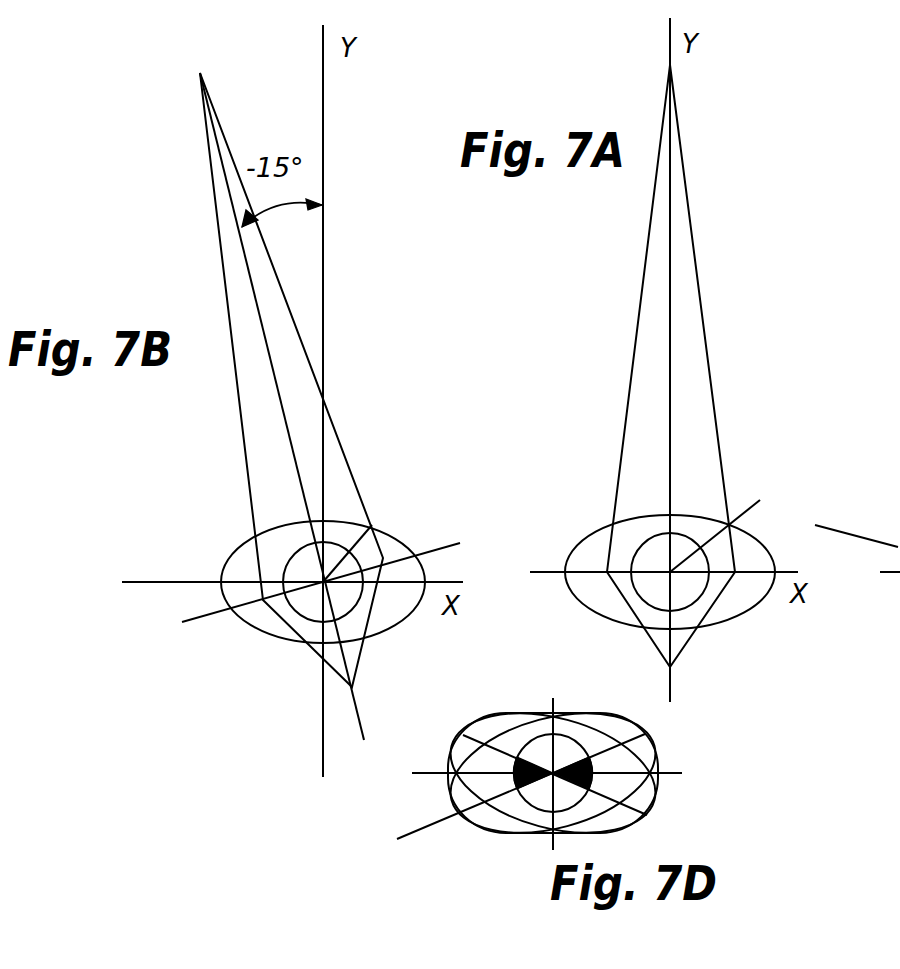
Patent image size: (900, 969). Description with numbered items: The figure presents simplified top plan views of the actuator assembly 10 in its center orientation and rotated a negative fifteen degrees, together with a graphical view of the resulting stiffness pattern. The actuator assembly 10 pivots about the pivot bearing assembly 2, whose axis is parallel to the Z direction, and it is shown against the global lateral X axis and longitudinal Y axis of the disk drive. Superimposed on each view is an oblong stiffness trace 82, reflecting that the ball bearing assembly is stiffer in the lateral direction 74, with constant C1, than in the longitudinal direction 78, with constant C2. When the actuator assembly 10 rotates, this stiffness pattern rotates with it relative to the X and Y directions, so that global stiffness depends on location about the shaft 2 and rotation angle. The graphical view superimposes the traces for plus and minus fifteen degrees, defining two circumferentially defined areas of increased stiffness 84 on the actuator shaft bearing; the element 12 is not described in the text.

In FIG. 7B, the actuator assembly 10 is at (280, 343).
In FIG. 7A, the actuator assembly 10 is at (685, 302).
In FIG. 7B, the longitudinal direction 78 is at (277, 397).
In FIG. 7A, the longitudinal direction 78 is at (672, 383).
In FIG. 7B, the pivot bearing assembly 2 is at (372, 525).
In FIG. 7A, the pivot bearing assembly 2 is at (760, 500).
In FIG. 7B, the oblong stiffness trace 82 is at (398, 527).
In FIG. 7A, the oblong stiffness trace 82 is at (760, 540).
In FIG. 7B, the lateral direction 74 is at (442, 548).
In FIG. 7A, the lateral direction 74 is at (788, 570).
In FIG. 7D, the lateral direction 74 is at (497, 750).
In FIG. 7D, the center element 12 is at (553, 773).
In FIG. 7D, the areas of increased stiffness 84 is at (647, 803).